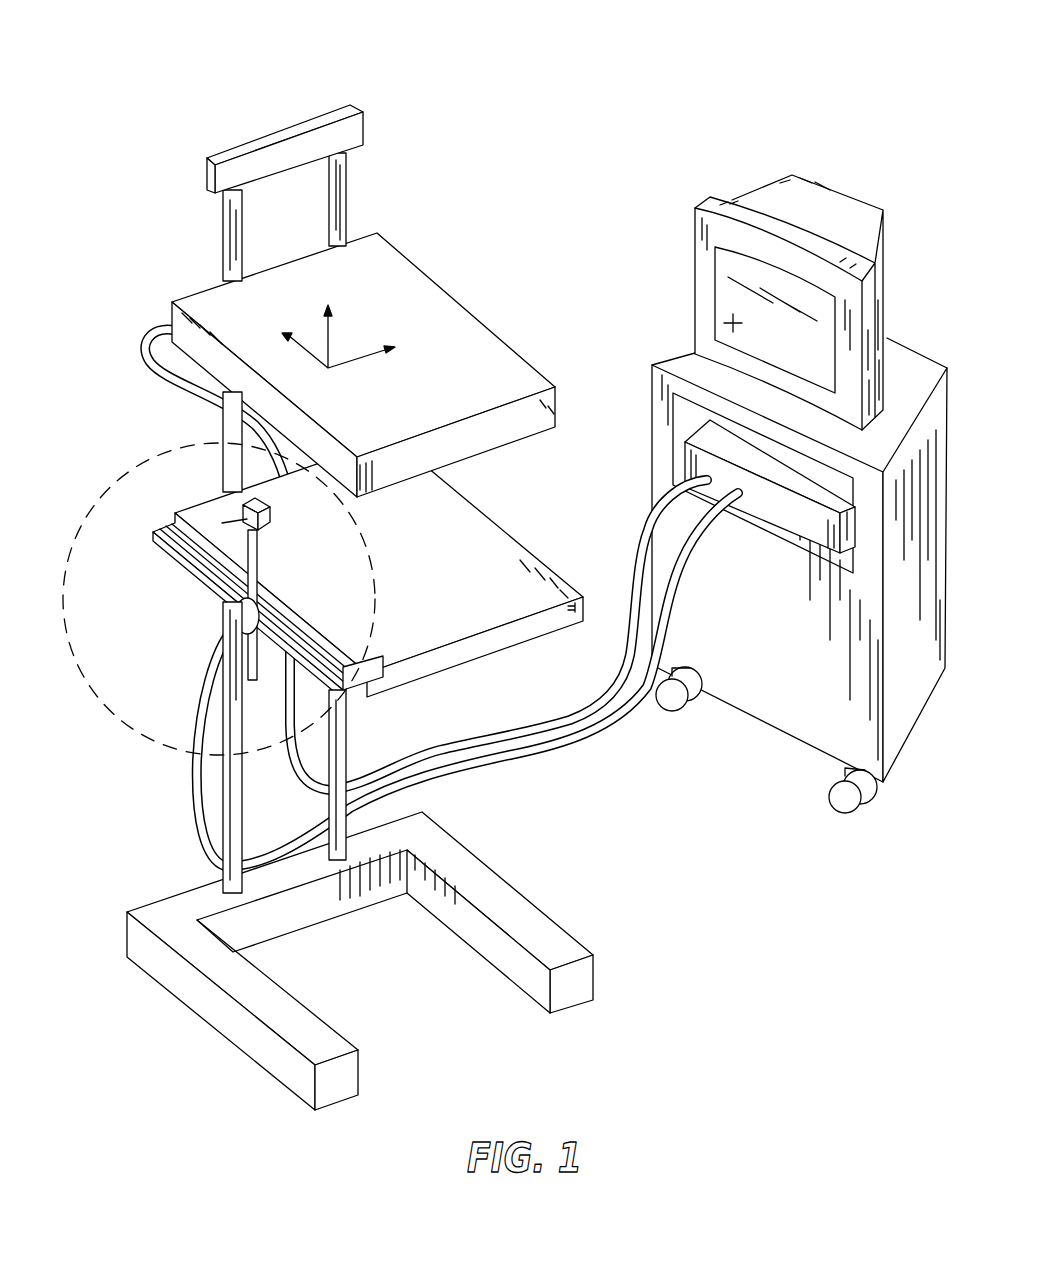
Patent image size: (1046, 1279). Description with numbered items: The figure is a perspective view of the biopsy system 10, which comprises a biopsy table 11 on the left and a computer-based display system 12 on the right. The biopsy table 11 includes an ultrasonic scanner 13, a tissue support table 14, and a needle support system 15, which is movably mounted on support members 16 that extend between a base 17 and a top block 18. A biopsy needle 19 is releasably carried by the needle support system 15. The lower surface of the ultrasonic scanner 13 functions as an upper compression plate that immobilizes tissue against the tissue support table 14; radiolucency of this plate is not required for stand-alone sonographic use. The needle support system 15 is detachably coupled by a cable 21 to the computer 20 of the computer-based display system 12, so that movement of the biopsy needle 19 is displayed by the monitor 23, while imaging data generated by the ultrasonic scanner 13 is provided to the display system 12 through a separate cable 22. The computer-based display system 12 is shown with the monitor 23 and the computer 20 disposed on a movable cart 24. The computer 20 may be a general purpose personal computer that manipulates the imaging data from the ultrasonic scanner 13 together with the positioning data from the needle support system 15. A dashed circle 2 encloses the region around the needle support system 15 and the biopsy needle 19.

The measurement system 10 is at (510, 75).
The positioning stand 11 is at (180, 181).
The cart with monitor 12 is at (783, 147).
The upper plate 13 is at (455, 300).
The lower plate 14 is at (490, 645).
The sensor rail assembly 15 is at (183, 605).
The vertical posts 16 is at (222, 237).
The base 17 is at (512, 960).
The top bar 18 is at (300, 130).
The slider 19 is at (300, 500).
The control unit 20 is at (802, 525).
The cable bundle 21 is at (545, 760).
The cable 22 is at (145, 328).
The monitor 23 is at (727, 295).
The casters 24 is at (793, 718).
The detail region circle 2 is at (160, 452).